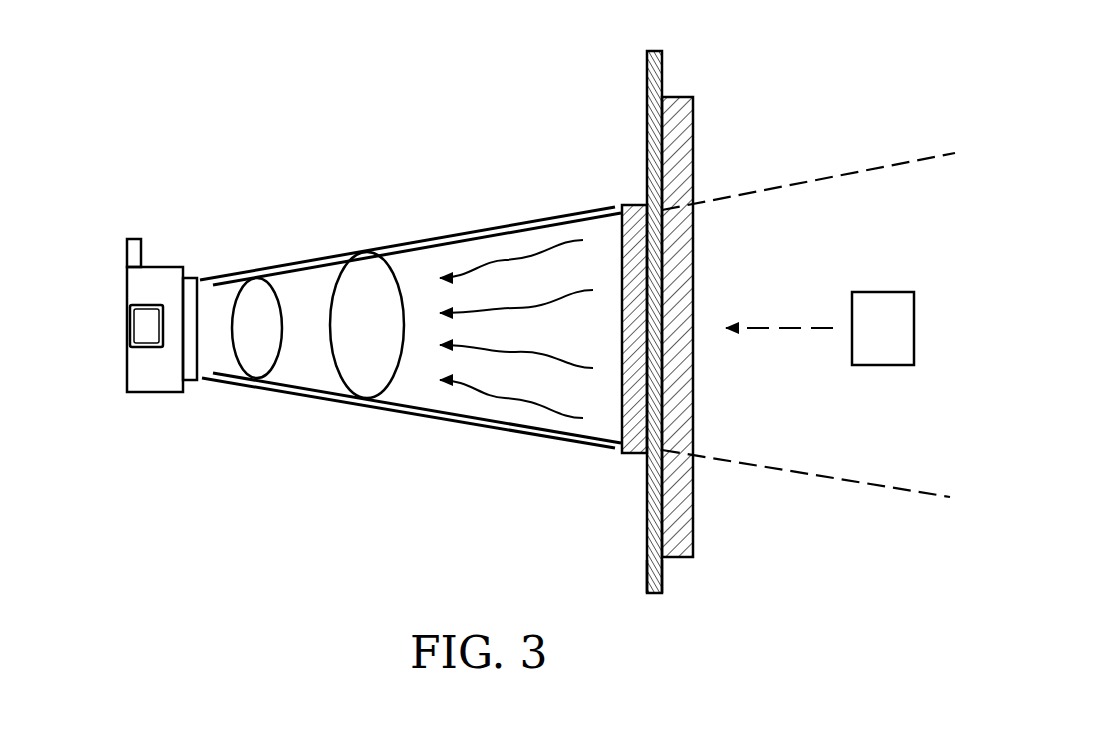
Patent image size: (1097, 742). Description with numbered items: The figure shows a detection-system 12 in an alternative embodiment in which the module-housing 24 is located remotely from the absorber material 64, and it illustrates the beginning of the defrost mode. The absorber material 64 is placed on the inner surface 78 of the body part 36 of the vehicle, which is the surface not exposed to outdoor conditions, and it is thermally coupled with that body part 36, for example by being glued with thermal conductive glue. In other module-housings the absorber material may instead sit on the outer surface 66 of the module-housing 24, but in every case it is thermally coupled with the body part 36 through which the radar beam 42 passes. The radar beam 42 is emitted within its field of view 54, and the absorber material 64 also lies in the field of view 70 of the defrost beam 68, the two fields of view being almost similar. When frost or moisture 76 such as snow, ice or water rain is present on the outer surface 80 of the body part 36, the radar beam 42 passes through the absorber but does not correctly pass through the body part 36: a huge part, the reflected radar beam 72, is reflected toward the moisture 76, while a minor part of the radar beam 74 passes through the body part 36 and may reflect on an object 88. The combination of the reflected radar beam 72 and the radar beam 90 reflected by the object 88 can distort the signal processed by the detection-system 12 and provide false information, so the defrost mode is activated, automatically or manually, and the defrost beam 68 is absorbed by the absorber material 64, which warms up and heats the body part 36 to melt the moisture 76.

The detection-system 12 is at (139, 274).
The module-housing 24 is at (139, 323).
The body part 36 is at (647, 100).
The radar beam 42 is at (294, 260).
The field of view of the radar beam 54 is at (273, 353).
The absorber material 64 is at (622, 425).
The outer surface 66 is at (190, 388).
The defrost beam 68 is at (410, 286).
The field of view of the defrost beam 70 is at (367, 380).
The reflected radar beam 72 is at (495, 402).
The minor part of the radar beam 74 is at (824, 170).
The frost or moisture 76 is at (693, 120).
The inner surface 78 is at (647, 553).
The outer surface of the body part 80 is at (662, 565).
The object 88 is at (907, 350).
The radar beam reflected by the object 90 is at (783, 328).